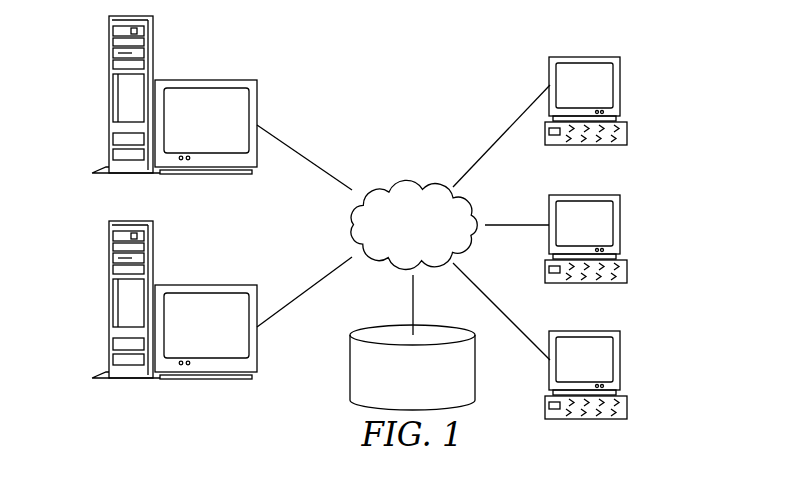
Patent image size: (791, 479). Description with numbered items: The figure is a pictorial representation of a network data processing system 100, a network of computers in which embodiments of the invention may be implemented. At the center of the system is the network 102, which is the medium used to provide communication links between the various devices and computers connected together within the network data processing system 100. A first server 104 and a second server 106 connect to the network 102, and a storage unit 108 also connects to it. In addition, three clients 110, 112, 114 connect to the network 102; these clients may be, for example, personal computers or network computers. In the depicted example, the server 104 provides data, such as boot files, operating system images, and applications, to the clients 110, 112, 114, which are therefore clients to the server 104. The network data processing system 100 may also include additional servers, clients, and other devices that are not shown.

The network data processing system 100 is at (464, 63).
The network 102 is at (385, 177).
The server 104 is at (108, 95).
The server 106 is at (108, 300).
The storage unit 108 is at (352, 375).
The client 110 is at (621, 84).
The client 112 is at (621, 222).
The client 114 is at (623, 360).